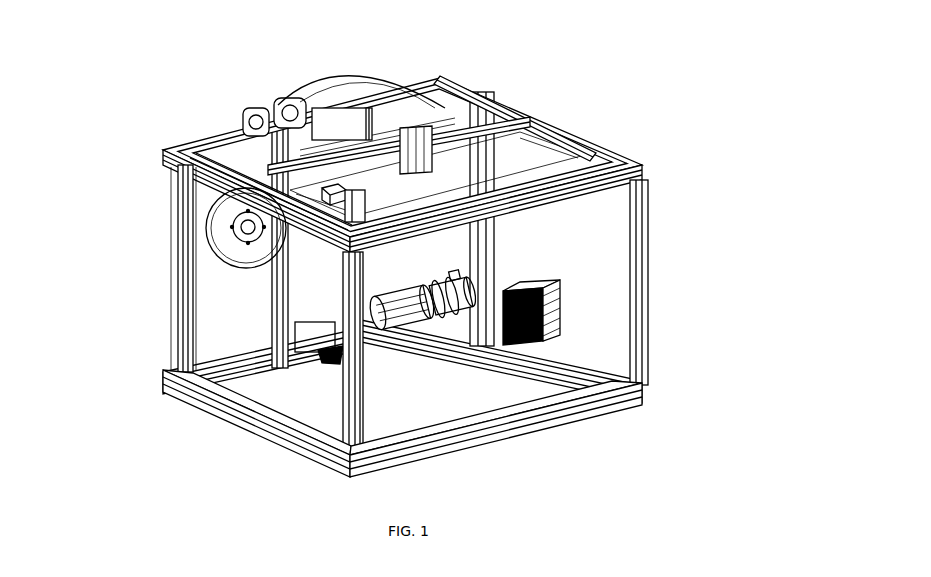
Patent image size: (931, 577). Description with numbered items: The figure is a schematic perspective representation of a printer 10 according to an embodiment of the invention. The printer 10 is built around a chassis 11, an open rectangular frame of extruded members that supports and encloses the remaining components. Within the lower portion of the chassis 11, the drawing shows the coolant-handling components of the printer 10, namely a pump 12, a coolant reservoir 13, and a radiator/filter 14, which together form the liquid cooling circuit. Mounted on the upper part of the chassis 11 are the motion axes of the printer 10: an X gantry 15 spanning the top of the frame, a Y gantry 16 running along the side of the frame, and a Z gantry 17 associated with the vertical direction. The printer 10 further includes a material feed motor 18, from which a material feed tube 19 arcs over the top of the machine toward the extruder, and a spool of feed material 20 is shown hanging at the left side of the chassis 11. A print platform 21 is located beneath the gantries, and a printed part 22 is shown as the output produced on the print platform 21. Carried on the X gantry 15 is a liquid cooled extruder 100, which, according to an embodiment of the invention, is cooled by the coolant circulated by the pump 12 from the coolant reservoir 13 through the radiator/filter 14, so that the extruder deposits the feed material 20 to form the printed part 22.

The printer 10 is at (135, 18).
The chassis 11 is at (649, 354).
The pump 12 is at (432, 303).
The coolant reservoir 13 is at (478, 288).
The radiator/filter 14 is at (558, 305).
The X gantry 15 is at (462, 122).
The Y gantry 16 is at (200, 190).
The Z gantry 17 is at (160, 378).
The material feed motor 18 is at (240, 117).
The material feed tube 19 is at (290, 88).
The feed material 20 is at (245, 220).
The print platform 21 is at (350, 167).
The printed part 22 is at (335, 195).
The liquid cooled extruder 100 is at (405, 180).